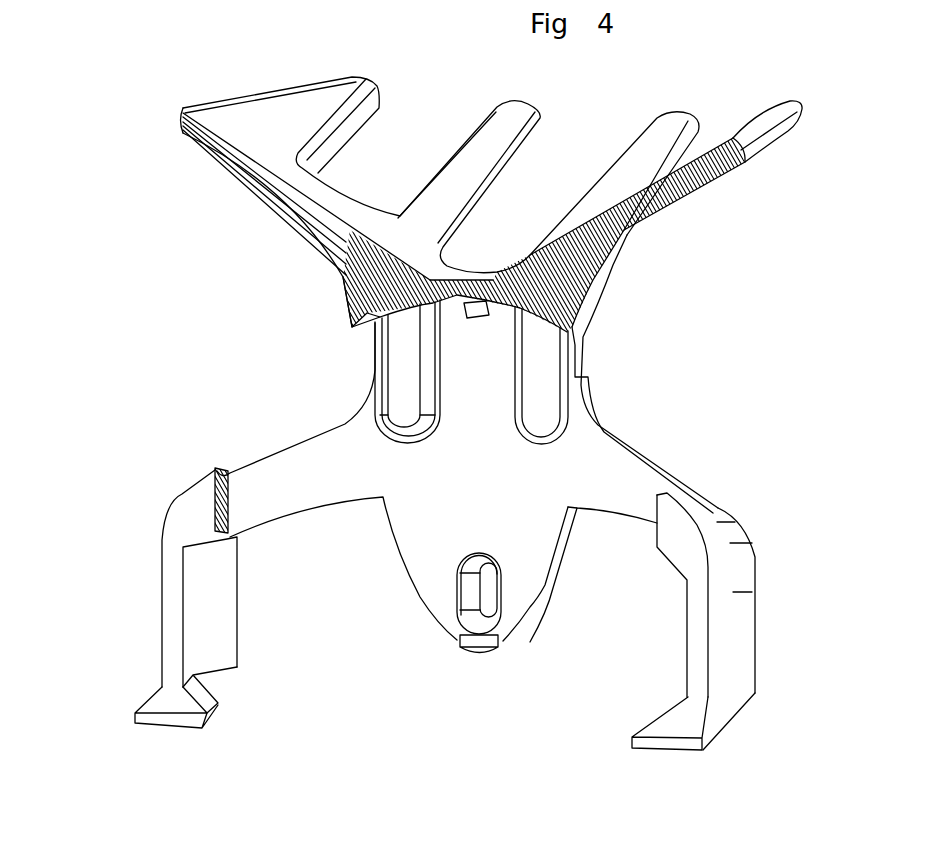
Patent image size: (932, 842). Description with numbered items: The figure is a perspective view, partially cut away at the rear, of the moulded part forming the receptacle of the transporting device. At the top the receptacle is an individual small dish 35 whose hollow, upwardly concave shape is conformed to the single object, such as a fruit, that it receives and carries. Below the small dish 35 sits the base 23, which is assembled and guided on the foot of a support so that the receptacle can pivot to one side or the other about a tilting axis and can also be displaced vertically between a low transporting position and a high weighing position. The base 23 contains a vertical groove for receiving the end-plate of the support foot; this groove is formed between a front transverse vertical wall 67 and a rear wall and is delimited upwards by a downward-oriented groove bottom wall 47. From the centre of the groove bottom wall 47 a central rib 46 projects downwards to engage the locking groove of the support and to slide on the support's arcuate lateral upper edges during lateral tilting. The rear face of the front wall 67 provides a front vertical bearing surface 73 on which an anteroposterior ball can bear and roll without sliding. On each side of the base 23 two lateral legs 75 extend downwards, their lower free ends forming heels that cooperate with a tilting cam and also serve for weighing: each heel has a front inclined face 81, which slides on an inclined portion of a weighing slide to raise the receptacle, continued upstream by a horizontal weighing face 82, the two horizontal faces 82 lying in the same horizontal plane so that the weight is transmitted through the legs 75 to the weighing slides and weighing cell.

The base 23 is at (515, 480).
The small dish 35 is at (422, 247).
The central rib 46 is at (460, 320).
The groove bottom wall 47 is at (386, 305).
The front transverse vertical wall 67 is at (470, 378).
The front vertical bearing surface 73 is at (405, 376).
The lateral legs 75 is at (207, 627).
The front inclined face 81 is at (740, 714).
The horizontal weighing face 82 is at (165, 722).